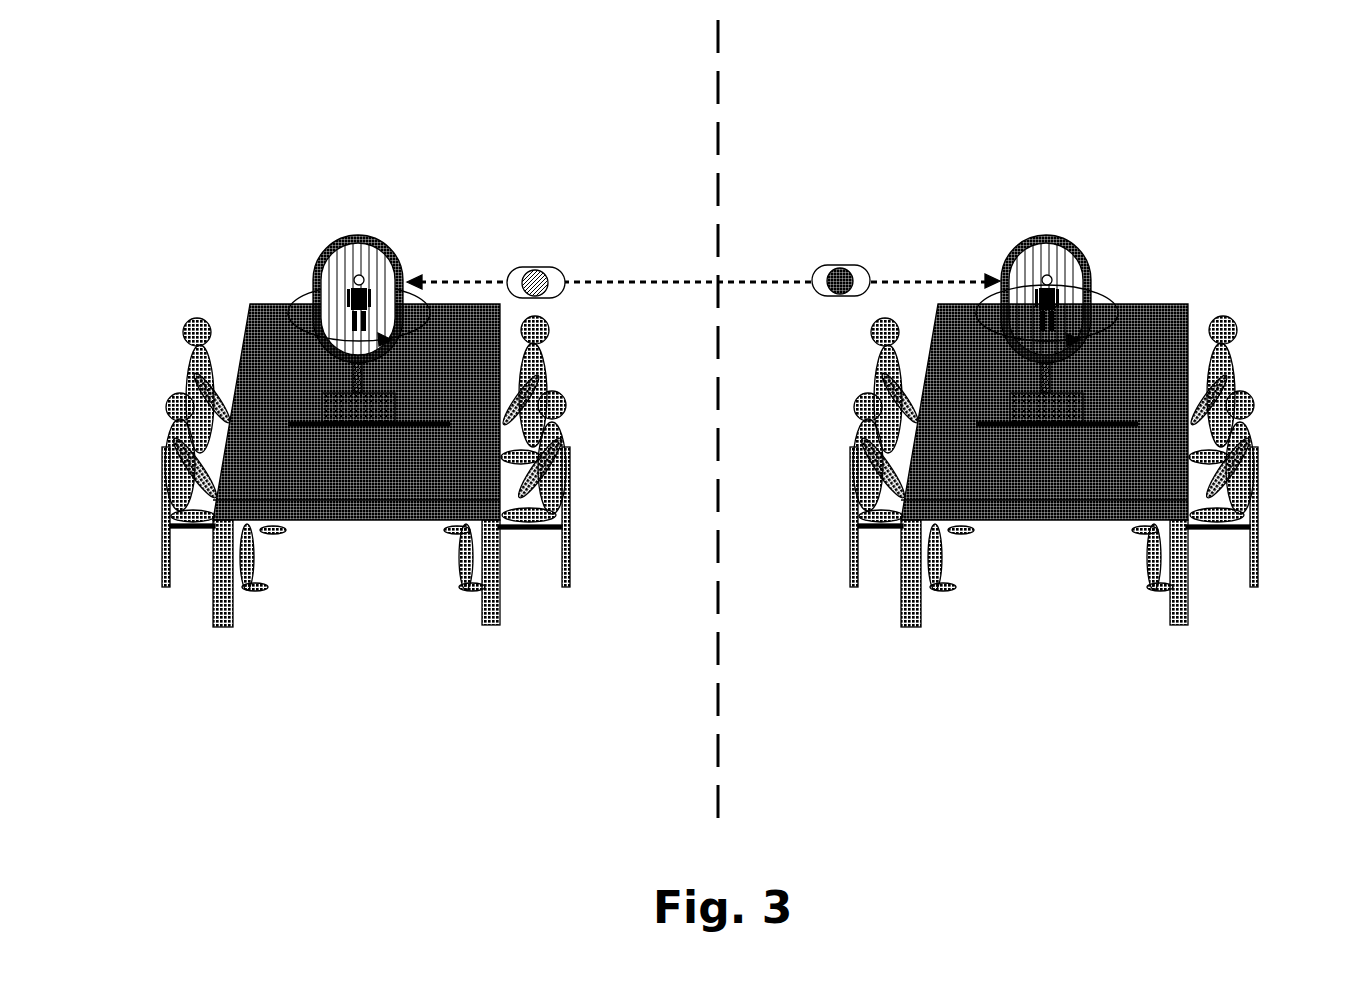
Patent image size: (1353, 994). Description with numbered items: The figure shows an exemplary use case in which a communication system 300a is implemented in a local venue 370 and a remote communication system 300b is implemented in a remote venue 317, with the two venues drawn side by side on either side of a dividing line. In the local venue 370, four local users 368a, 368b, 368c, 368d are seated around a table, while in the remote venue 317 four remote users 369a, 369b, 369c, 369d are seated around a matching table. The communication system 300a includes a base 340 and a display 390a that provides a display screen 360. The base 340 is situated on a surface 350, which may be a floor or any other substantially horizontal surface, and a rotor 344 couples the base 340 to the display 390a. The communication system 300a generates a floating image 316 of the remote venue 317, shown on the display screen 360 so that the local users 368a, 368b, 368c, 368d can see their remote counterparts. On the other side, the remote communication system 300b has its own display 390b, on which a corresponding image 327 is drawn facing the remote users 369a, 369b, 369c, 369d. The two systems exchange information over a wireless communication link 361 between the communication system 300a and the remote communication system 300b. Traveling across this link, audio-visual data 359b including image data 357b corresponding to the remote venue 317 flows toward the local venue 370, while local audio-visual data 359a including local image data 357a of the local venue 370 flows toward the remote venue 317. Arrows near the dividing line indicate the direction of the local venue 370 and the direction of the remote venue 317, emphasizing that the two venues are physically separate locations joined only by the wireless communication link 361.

The communication system 300a is at (243, 170).
The remote communication system 300b is at (1205, 137).
The display 390a is at (300, 243).
The display 390b is at (1015, 271).
The display screen 360 is at (397, 262).
The floating image 316 is at (388, 279).
The representation of local participant 327 is at (1097, 291).
The rotor 344 is at (364, 378).
The base 340 is at (398, 405).
The surface 350 is at (307, 420).
The local image data 357a is at (538, 270).
The image data 357b is at (840, 268).
The local audio-visual data 359a is at (566, 278).
The audio-visual data 359b is at (815, 272).
The wireless communication link 361 is at (678, 290).
The local user 368a is at (167, 398).
The local user 368b is at (185, 326).
The local user 368c is at (549, 324).
The local user 368d is at (566, 398).
The remote user 369a is at (862, 487).
The remote user 369b is at (880, 450).
The remote user 369c is at (1229, 450).
The remote user 369d is at (1248, 490).
The local venue 370 is at (707, 612).
The remote venue 317 is at (733, 661).